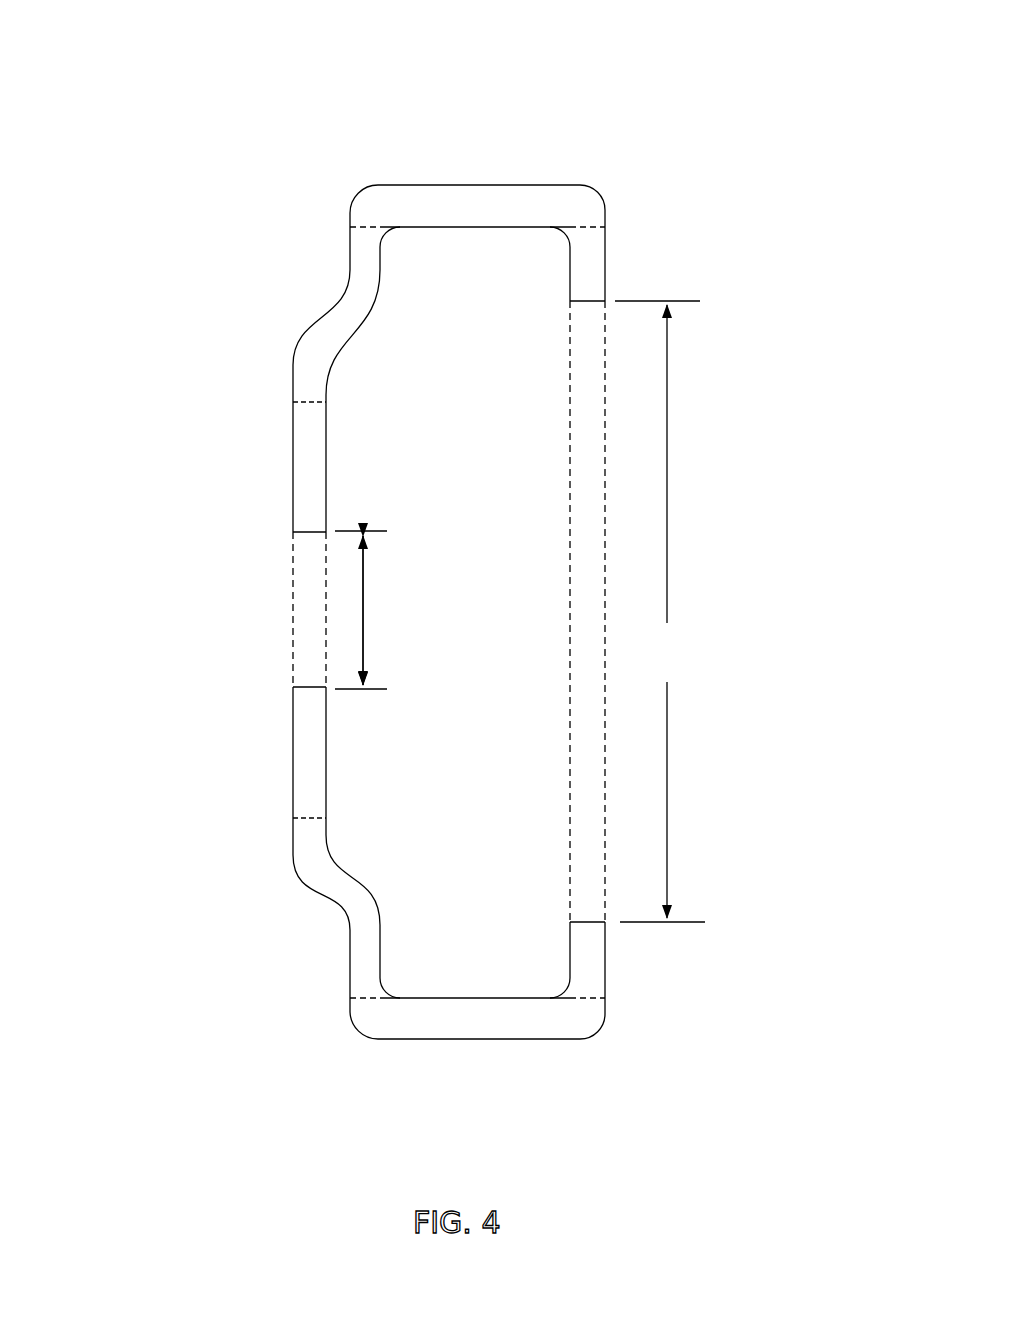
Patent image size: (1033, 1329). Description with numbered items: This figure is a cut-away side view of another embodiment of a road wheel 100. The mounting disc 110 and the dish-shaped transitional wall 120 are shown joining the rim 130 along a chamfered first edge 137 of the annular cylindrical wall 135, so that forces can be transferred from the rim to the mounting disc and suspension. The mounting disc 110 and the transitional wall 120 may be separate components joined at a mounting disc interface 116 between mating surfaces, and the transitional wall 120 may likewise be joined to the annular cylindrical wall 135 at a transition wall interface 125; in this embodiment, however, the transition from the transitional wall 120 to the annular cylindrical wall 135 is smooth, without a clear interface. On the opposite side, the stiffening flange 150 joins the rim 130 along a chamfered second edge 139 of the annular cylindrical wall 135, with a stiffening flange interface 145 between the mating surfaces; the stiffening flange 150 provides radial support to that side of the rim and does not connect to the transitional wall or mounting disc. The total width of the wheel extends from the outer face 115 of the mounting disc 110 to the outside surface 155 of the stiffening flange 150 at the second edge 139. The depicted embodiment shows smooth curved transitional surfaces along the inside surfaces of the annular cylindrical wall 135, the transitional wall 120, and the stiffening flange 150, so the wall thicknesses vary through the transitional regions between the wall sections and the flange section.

The road wheel 100 is at (240, 948).
The mounting disc 110 is at (300, 455).
The outer face of the mounting disc 115 is at (290, 498).
The mounting disc interface 116 is at (303, 405).
The transition wall 120 is at (297, 365).
The transition wall interface 125 is at (365, 230).
The rim 130 is at (480, 210).
The annular cylindrical wall 135 is at (458, 183).
The first rim edge 137 is at (342, 210).
The second edge 139 is at (607, 213).
The stiffening flange interface 145 is at (585, 230).
The stiffening flange 150 is at (587, 271).
The outside surface of the stiffening flange 155 is at (607, 250).